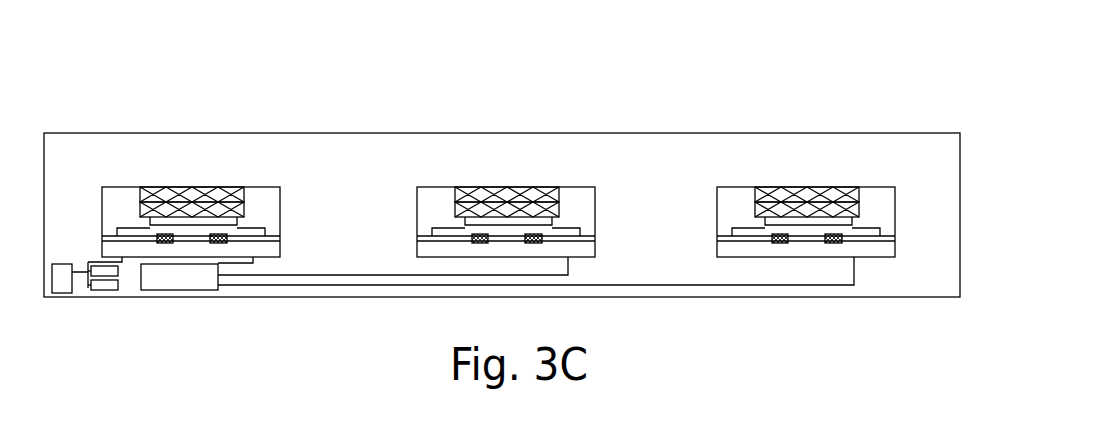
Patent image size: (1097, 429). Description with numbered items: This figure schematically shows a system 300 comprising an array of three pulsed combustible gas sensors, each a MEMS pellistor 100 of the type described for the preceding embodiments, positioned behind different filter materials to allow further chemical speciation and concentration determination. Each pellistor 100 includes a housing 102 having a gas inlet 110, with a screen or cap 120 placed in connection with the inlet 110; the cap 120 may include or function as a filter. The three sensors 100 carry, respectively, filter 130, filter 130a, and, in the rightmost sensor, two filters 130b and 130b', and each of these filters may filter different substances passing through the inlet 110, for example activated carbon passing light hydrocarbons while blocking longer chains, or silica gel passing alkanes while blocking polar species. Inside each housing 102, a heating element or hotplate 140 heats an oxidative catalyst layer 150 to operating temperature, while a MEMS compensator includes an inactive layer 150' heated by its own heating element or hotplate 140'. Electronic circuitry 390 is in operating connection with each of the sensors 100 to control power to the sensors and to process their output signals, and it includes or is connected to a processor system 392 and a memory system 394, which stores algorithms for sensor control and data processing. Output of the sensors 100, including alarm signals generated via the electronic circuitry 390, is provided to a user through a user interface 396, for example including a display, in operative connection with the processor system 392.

The system 300 is at (160, 92).
The MEMS pellistor 100 is at (503, 216).
The housing 102 is at (282, 217).
The gas inlet 110 is at (541, 216).
The screen or cap 120 is at (185, 187).
The filter 130 is at (245, 198).
The filter 130a is at (558, 200).
The filter 130b is at (849, 187).
The filter 130b' is at (784, 248).
The heating element or hotplate 140 is at (420, 248).
The heating element or hotplate 140' is at (574, 255).
The oxidative catalyst layer 150 is at (412, 215).
The inactive layer 150' is at (596, 223).
The electronic circuitry 390 is at (497, 273).
The processor system 392 is at (120, 272).
The memory system 394 is at (112, 290).
The user interface 396 is at (66, 293).